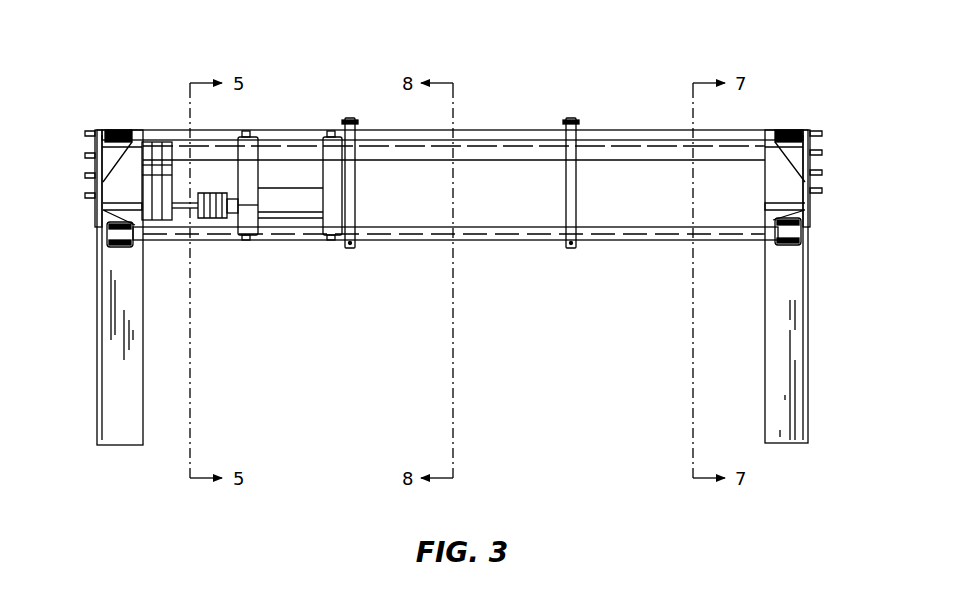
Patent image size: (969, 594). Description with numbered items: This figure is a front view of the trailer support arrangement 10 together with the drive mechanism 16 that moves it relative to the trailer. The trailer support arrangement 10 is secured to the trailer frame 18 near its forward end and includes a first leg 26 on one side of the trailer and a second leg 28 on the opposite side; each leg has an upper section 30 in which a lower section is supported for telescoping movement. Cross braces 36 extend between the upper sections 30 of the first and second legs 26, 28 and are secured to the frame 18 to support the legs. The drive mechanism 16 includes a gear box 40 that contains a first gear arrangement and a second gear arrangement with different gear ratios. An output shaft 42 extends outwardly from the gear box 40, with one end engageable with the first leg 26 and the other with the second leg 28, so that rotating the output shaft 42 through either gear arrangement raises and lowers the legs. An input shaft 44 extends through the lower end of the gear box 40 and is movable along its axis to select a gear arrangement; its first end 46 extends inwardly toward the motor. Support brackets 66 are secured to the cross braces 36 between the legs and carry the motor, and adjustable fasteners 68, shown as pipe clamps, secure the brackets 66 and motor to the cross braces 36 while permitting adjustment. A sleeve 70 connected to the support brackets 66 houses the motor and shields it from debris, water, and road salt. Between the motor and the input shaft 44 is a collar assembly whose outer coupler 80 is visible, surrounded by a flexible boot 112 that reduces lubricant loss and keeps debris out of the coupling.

The trailer support arrangement 10 is at (675, 48).
The drive mechanism 16 is at (290, 272).
The frame 18 is at (351, 117).
The first leg 26 is at (88, 330).
The second leg 28 is at (818, 347).
The upper section 30 is at (104, 415).
The cross braces 36 is at (628, 138).
The gear box 40 is at (160, 224).
The output shaft 42 is at (487, 130).
The input shaft 44 is at (125, 204).
The first end 46 is at (232, 216).
The support brackets 66 is at (251, 140).
The adjustable fasteners 68 is at (120, 130).
The sleeve 70 is at (287, 195).
The outer coupler 80 is at (236, 226).
The boot 112 is at (207, 191).